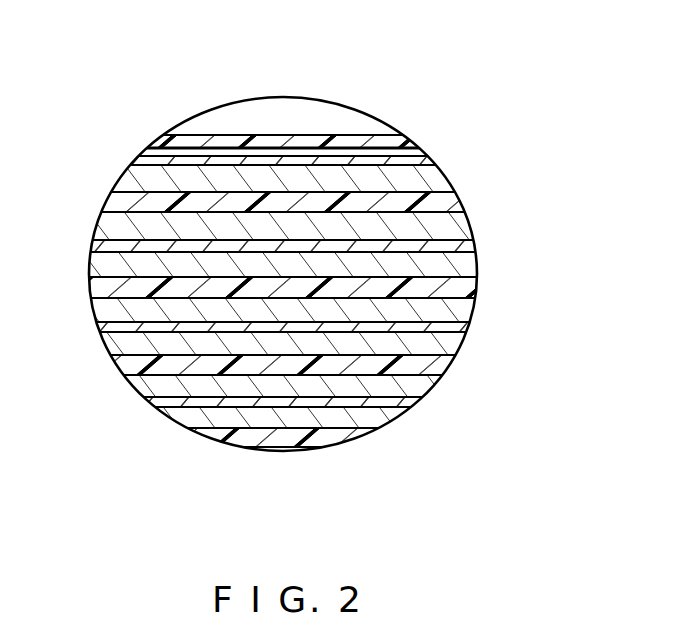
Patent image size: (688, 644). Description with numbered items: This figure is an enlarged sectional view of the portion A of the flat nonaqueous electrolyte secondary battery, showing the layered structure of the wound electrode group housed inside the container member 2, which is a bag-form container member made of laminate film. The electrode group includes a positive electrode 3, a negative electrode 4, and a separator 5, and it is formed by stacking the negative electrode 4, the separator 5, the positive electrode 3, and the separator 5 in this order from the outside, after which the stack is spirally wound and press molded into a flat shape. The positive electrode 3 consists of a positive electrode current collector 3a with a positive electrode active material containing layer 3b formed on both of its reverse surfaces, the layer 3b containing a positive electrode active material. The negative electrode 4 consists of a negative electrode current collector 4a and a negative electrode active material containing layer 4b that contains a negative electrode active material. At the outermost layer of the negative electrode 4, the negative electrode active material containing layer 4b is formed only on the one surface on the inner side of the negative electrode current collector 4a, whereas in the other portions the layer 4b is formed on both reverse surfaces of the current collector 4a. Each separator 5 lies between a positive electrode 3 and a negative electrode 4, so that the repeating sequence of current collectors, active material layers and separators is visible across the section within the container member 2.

The container member 2 is at (408, 146).
The portion A is at (192, 128).
The positive electrode 3 is at (550, 190).
The positive electrode current collector 3a is at (453, 241).
The positive electrode active material containing layer 3b is at (447, 213).
The negative electrode 4 is at (521, 121).
The negative electrode current collector 4a is at (433, 147).
The negative electrode active material containing layer 4b is at (435, 178).
The separator 5 is at (122, 204).